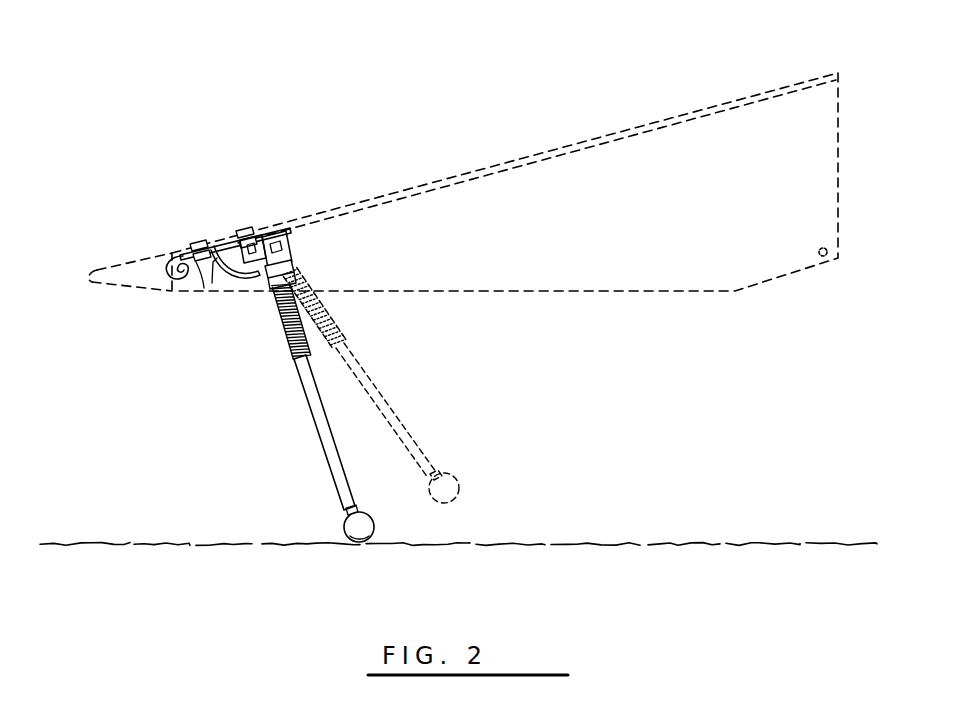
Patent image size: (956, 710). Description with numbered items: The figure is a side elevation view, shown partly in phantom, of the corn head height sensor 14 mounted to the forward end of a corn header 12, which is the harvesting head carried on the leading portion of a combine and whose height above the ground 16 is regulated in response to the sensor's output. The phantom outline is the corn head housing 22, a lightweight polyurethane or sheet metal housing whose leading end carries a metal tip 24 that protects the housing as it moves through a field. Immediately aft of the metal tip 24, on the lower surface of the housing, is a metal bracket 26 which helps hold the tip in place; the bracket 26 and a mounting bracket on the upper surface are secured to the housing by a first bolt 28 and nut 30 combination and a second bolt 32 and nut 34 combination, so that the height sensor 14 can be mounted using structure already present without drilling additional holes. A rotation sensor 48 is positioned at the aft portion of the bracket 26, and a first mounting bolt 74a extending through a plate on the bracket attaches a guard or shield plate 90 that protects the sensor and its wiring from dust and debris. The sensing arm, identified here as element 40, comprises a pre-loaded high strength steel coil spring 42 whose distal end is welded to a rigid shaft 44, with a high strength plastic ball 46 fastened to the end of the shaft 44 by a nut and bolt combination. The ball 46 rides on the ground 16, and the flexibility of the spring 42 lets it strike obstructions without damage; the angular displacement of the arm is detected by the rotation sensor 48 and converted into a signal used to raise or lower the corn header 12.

The corn header 12 is at (438, 182).
The corn head height sensor 14 is at (271, 334).
The ground (soil) 16 is at (550, 541).
The corn head housing 22 is at (440, 182).
The metal tip 24 is at (97, 268).
The bracket (strap) 26 is at (175, 255).
The first bolt 28 is at (195, 243).
The nut 30 is at (193, 262).
The second bolt 32 is at (244, 229).
The nut 34 is at (252, 236).
The support leg 40 is at (274, 413).
The coil spring 42 is at (291, 342).
The rigid shaft 44 is at (323, 428).
The ball 46 is at (343, 522).
The rotation sensor 48 is at (279, 231).
The first mounting bolt 74a is at (212, 285).
The guard or shield plate 90 is at (246, 278).